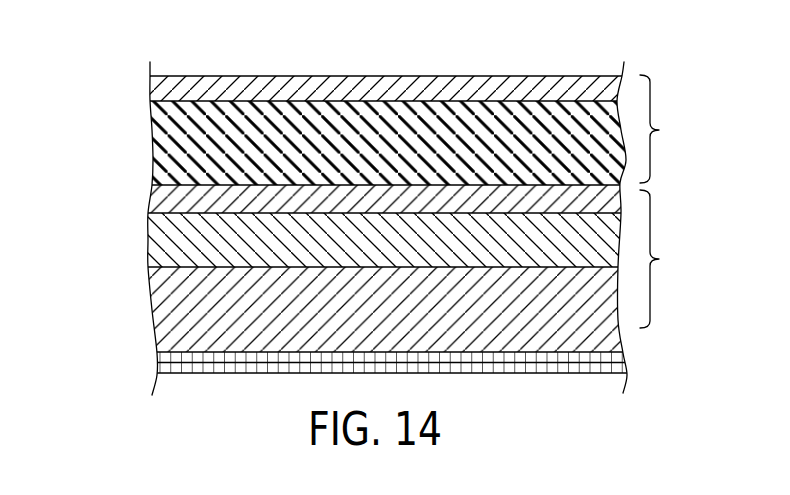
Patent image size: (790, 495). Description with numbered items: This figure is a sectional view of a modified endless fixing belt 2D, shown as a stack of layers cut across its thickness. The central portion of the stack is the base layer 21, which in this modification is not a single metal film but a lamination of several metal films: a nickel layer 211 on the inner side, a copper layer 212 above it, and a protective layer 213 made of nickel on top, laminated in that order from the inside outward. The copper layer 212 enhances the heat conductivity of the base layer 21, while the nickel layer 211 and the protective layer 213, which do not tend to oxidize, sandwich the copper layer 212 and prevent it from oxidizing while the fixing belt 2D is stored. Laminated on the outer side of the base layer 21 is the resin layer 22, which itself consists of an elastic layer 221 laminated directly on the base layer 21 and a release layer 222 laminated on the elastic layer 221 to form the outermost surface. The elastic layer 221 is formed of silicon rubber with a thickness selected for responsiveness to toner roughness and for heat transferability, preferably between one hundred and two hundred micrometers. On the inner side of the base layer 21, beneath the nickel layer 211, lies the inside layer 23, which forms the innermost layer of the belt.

The fixing belt 2D is at (589, 70).
The resin layer 22 is at (668, 129).
The release layer 222 is at (148, 89).
The elastic layer 221 is at (165, 146).
The base layer 21 is at (668, 259).
The protective layer 213 is at (150, 197).
The copper layer 212 is at (158, 243).
The nickel layer 211 is at (157, 314).
The inside layer 23 is at (618, 361).